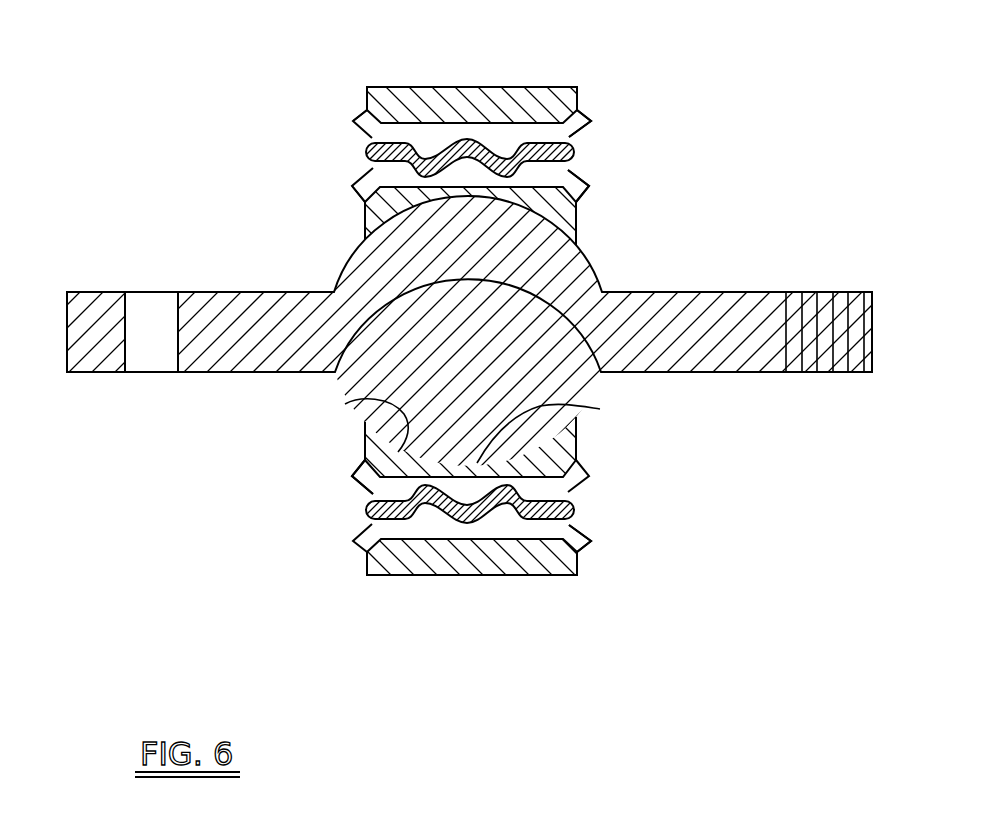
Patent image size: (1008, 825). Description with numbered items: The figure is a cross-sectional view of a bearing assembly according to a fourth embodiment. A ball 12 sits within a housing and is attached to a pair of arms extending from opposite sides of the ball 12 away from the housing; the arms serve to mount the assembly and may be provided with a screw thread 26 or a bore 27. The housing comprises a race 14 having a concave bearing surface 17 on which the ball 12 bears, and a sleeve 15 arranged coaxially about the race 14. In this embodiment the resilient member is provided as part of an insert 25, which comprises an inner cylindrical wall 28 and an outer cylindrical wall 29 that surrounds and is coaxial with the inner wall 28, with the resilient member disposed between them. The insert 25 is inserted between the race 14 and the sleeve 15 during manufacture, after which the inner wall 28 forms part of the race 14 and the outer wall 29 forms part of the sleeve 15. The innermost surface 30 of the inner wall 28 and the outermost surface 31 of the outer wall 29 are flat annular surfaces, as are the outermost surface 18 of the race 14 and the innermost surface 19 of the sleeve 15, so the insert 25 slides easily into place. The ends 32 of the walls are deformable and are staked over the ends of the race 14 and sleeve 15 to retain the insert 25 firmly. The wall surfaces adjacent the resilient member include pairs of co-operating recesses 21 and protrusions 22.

The ball 12 is at (383, 293).
The race 14 is at (585, 480).
The sleeve 15 is at (600, 575).
The concave bearing surface 17 is at (377, 400).
The outermost surface of the race 18 is at (600, 409).
The innermost surface of the sleeve 19 is at (441, 540).
The recesses 21 is at (479, 142).
The protrusions 22 is at (428, 138).
The insert 25 is at (366, 137).
The screw thread 26 is at (833, 363).
The bore 27 is at (157, 357).
The inner cylindrical wall 28 is at (573, 173).
The outer cylindrical wall 29 is at (567, 130).
The innermost surface of the inner wall 30 is at (370, 488).
The outermost surface of the outer wall 31 is at (363, 528).
The ends of the inner and outer walls 32 is at (368, 183).